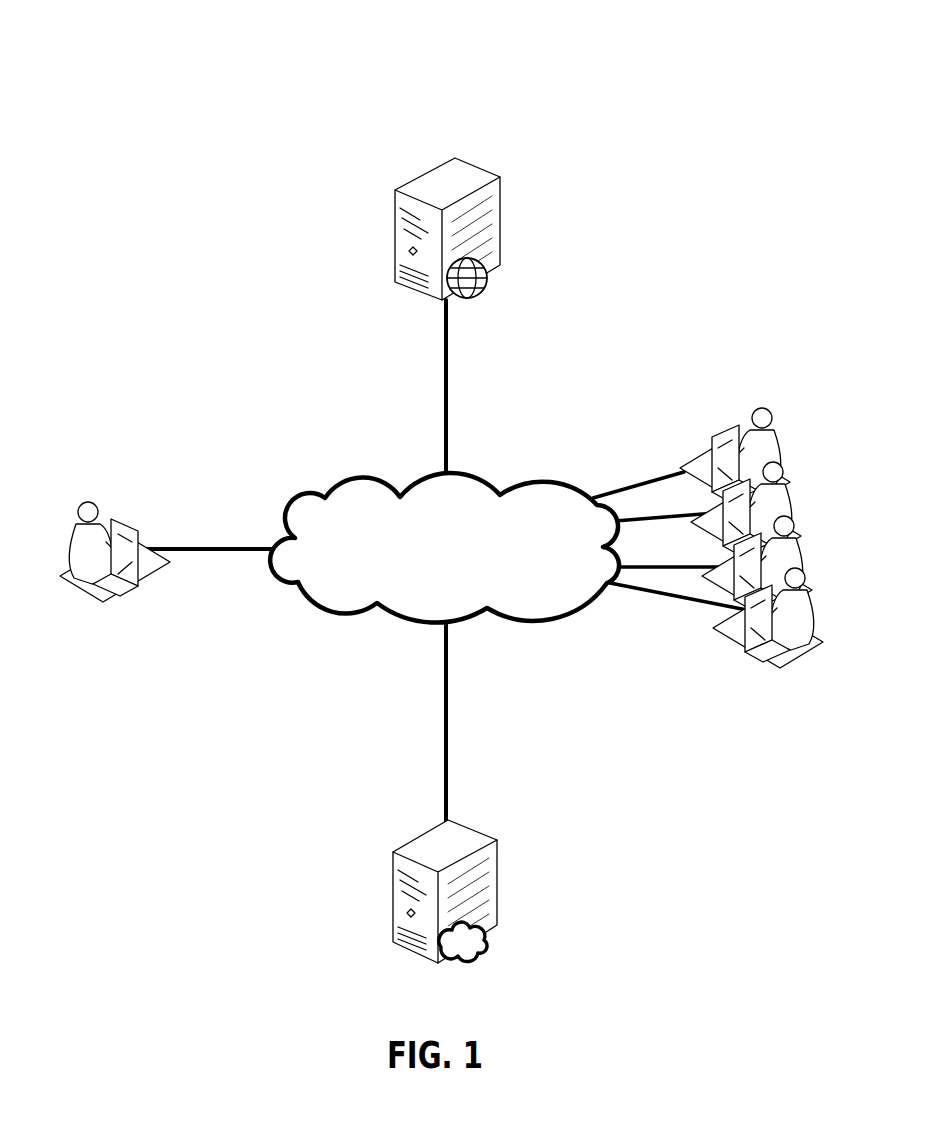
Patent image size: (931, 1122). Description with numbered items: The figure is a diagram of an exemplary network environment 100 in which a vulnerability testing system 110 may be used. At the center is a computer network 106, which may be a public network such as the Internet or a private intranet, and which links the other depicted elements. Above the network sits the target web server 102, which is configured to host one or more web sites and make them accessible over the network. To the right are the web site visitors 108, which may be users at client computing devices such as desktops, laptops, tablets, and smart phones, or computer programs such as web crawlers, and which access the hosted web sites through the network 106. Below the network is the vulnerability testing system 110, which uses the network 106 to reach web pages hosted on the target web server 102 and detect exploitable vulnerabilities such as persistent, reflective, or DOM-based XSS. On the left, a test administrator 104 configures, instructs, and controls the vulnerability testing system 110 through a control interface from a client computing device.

The network environment 100 is at (461, 62).
The target web server 102 is at (458, 157).
The test administrator 104 is at (90, 498).
The computer network 106 is at (533, 485).
The web site visitors 108 is at (757, 408).
The vulnerability testing system 110 is at (457, 818).